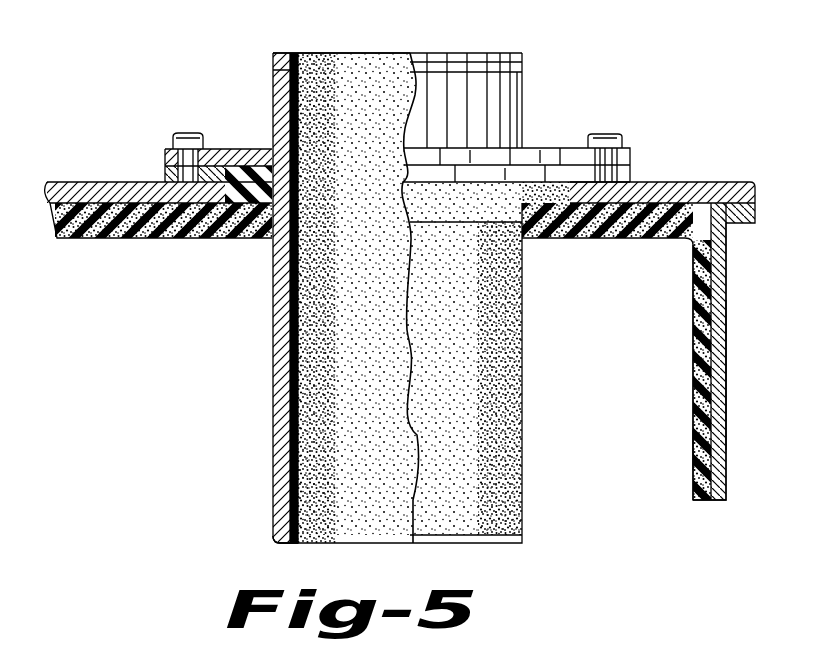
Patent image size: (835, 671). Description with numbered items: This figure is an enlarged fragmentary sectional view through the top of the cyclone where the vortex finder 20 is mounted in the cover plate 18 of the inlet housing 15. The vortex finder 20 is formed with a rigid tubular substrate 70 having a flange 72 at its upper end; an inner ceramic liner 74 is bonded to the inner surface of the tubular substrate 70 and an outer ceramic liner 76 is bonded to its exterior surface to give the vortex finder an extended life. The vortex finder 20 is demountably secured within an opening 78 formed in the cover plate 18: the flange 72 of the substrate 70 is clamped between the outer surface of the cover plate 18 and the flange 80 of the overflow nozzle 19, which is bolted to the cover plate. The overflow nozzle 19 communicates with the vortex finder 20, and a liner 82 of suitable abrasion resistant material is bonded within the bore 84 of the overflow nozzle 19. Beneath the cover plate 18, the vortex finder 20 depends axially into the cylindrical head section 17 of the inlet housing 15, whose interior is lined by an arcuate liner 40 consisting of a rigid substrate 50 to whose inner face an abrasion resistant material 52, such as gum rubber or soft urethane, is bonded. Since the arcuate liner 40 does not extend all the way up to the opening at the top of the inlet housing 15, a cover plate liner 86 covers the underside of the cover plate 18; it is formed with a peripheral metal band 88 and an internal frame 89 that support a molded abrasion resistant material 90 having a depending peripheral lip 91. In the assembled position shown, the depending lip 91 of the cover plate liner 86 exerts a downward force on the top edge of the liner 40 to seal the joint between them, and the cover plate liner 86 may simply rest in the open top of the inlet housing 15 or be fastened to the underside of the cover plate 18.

The inlet housing 15 is at (742, 312).
The cylindrical head section 17 is at (730, 437).
The cover plate 18 is at (710, 182).
The overflow nozzle 19 is at (472, 52).
The vortex finder 20 is at (530, 494).
The arcuate liner 40 is at (676, 440).
The rigid substrate 50 is at (720, 367).
The abrasion resistant material 52 is at (697, 342).
The rigid tubular substrate 70 is at (277, 310).
The flange 72 is at (240, 150).
The inner ceramic liner 74 is at (300, 538).
The outer ceramic liner 76 is at (273, 378).
The opening 78 is at (543, 204).
The flange 80 is at (630, 148).
The liner 82 is at (300, 85).
The bore 84 is at (310, 62).
The cover plate liner 86 is at (64, 245).
The peripheral metal band 88 is at (728, 228).
The internal frame 89 is at (168, 238).
The molded abrasion resistant material 90 is at (112, 232).
The depending peripheral lip 91 is at (686, 240).